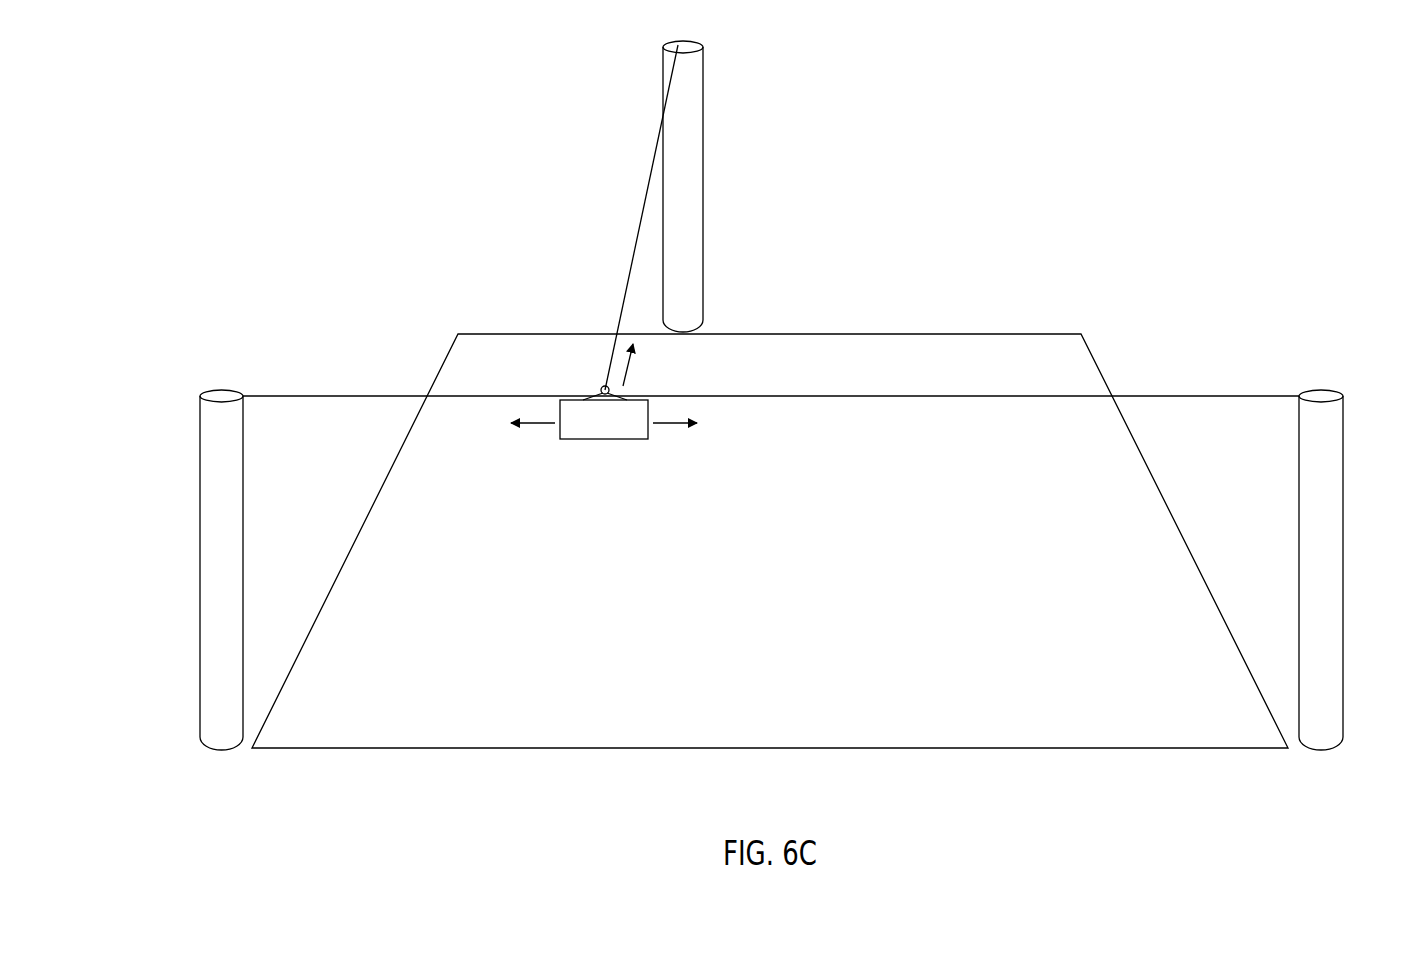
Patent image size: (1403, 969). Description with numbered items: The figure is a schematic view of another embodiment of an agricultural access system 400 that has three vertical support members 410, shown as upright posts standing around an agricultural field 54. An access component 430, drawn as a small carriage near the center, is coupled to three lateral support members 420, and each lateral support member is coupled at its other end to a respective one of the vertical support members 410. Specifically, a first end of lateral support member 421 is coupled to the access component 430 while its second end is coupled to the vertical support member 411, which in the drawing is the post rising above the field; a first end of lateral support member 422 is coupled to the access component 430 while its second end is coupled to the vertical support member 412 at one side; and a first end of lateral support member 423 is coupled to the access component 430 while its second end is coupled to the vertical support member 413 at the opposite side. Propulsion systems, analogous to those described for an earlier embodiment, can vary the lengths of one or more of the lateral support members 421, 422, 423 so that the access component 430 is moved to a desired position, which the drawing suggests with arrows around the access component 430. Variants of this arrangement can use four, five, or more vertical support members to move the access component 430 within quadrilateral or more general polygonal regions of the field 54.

The agricultural access system 400 is at (352, 100).
The vertical support members 410 is at (774, 395).
The vertical support member 411 is at (695, 236).
The vertical support member 412 is at (1325, 634).
The vertical support member 413 is at (220, 662).
The lateral support members 420 is at (771, 243).
The lateral support member 421 is at (630, 270).
The lateral support member 422 is at (1033, 397).
The lateral support member 423 is at (395, 398).
The access component 430 is at (637, 432).
The field 54 is at (1207, 749).